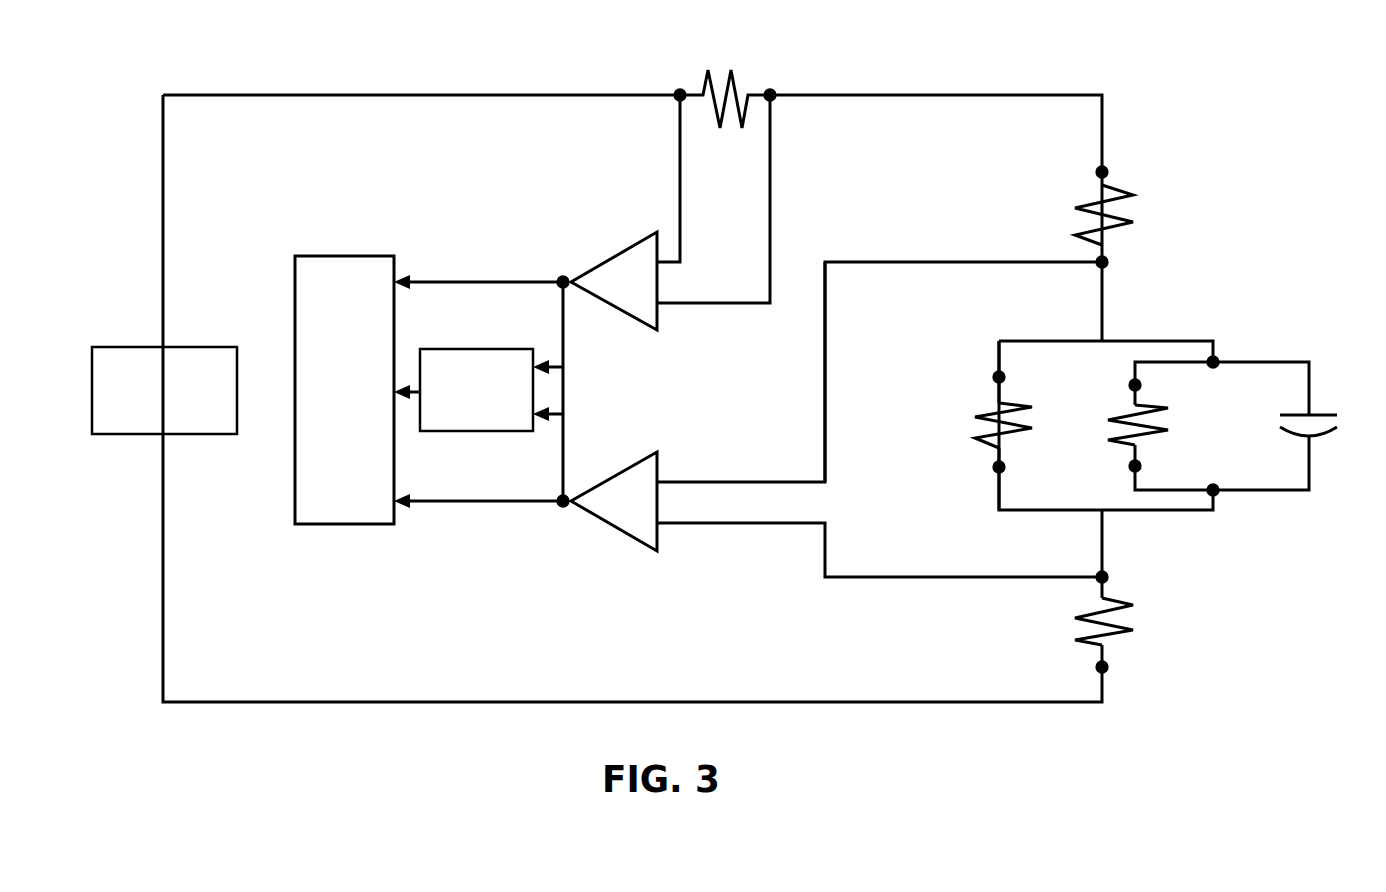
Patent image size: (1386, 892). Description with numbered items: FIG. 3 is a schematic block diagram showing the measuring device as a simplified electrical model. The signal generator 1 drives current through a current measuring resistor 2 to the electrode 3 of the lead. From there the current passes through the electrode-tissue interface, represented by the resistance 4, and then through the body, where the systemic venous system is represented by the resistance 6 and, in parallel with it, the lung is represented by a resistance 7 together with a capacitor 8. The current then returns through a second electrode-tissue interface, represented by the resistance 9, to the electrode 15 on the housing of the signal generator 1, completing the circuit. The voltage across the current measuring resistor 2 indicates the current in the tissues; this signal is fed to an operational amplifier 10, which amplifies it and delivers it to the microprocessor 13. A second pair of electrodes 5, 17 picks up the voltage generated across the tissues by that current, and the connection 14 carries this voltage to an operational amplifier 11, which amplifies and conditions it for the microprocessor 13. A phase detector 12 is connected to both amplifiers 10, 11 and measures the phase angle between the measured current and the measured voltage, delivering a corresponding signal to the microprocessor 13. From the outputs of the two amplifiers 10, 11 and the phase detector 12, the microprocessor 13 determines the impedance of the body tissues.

The signal generator 1 is at (113, 353).
The current measuring resistor 2 is at (708, 85).
The electrode 3 is at (1107, 170).
The resistance 4 is at (1125, 222).
The electrode 5 is at (1110, 262).
The resistance 6 is at (1015, 408).
The resistance 7 is at (1155, 408).
The capacitor 8 is at (1320, 415).
The resistance 9 is at (1130, 628).
The operational amplifier 10 is at (604, 270).
The operational amplifier 11 is at (622, 482).
The phase detector 12 is at (467, 357).
The microprocessor 13 is at (339, 265).
The wire 14 is at (941, 262).
The electrode 15 is at (1107, 667).
The electrode 17 is at (1107, 575).